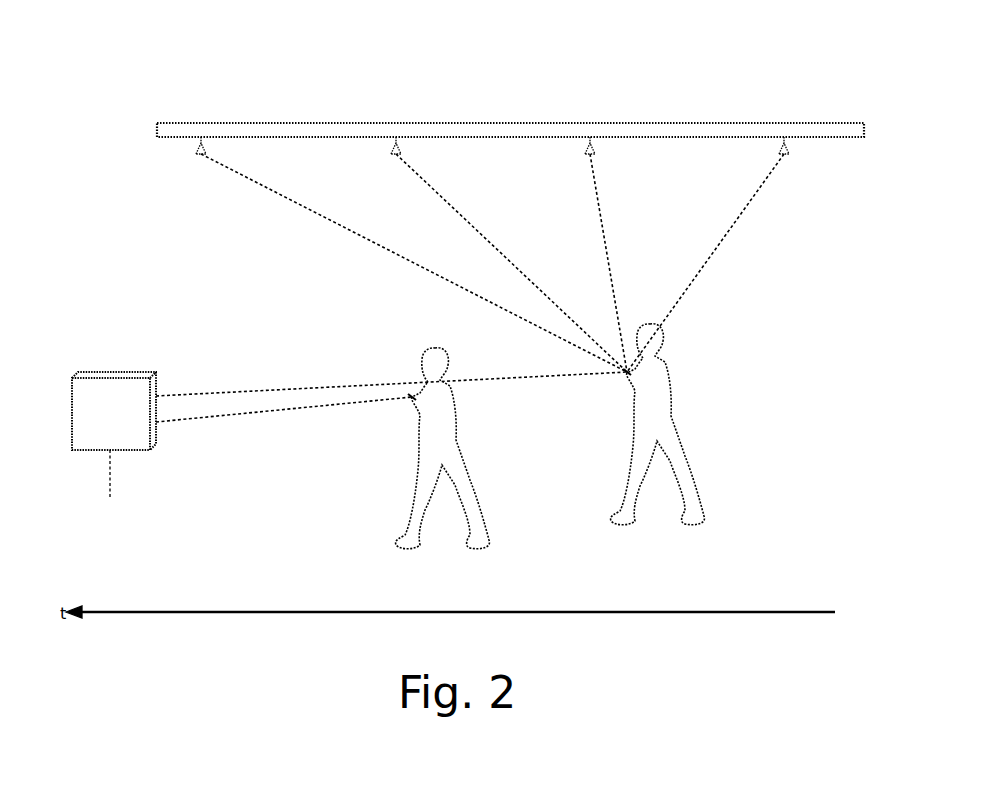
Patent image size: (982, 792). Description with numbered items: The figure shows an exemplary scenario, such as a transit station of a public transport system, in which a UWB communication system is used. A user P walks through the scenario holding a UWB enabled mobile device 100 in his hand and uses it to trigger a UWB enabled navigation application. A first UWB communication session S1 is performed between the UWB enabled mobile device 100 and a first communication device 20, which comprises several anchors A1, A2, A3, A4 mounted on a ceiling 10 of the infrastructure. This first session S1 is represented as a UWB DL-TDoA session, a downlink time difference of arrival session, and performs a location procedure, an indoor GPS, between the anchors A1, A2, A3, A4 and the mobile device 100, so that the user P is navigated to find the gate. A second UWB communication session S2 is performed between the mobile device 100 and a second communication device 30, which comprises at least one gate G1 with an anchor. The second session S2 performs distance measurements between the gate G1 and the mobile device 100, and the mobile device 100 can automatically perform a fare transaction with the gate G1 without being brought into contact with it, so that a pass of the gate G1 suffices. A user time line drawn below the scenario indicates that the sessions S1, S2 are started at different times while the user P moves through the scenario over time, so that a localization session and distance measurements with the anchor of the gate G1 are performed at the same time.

The first communication device 20 is at (437, 110).
The ceiling 10 is at (708, 137).
The anchor A1 is at (200, 152).
The anchor A2 is at (400, 155).
The anchor A3 is at (594, 152).
The anchor A4 is at (788, 155).
The first UWB communication session S1 is at (338, 224).
The second UWB communication session S2 is at (290, 409).
The gate G1 is at (114, 411).
The second communication device 30 is at (101, 474).
The user P is at (453, 446).
The UWB enabled mobile device 100 is at (412, 400).